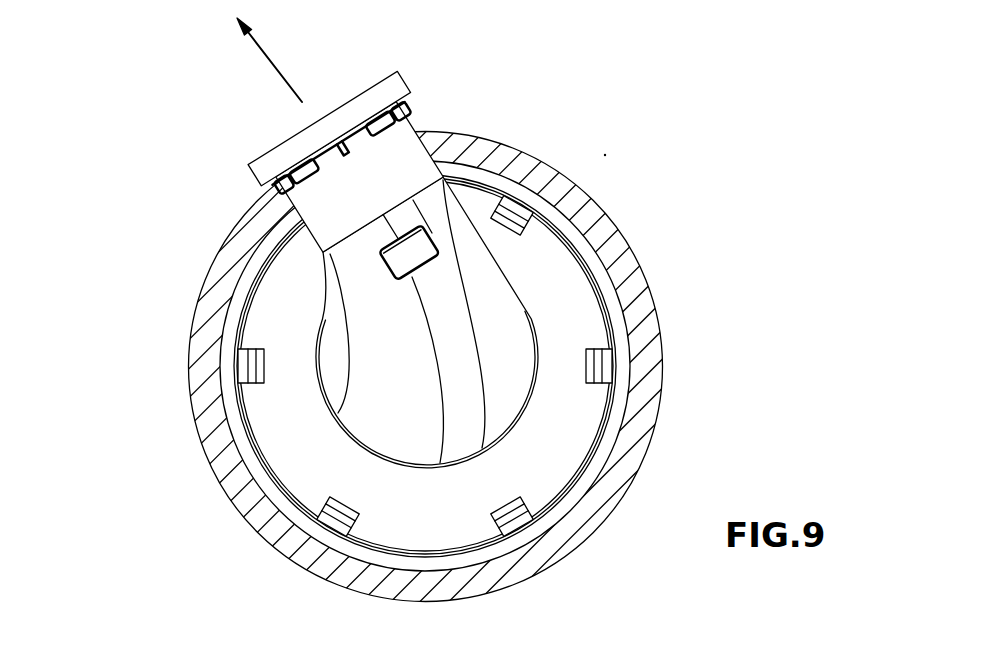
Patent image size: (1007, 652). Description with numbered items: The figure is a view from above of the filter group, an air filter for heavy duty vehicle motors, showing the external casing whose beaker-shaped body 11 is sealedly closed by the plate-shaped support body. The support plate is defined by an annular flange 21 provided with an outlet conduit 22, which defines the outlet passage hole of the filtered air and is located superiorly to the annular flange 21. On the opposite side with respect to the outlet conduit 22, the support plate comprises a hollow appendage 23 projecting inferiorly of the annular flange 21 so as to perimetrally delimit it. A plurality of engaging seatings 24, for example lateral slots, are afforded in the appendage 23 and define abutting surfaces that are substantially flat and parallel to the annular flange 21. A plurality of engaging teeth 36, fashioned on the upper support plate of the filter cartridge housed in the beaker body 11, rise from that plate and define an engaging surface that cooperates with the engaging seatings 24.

The beaker-shaped body 11 is at (238, 483).
The annular flange 21 is at (567, 318).
The outlet conduit 22 is at (458, 268).
The hollow appendage 23 is at (600, 440).
The engaging seatings 24 is at (617, 357).
The engaging teeth 36 is at (615, 365).